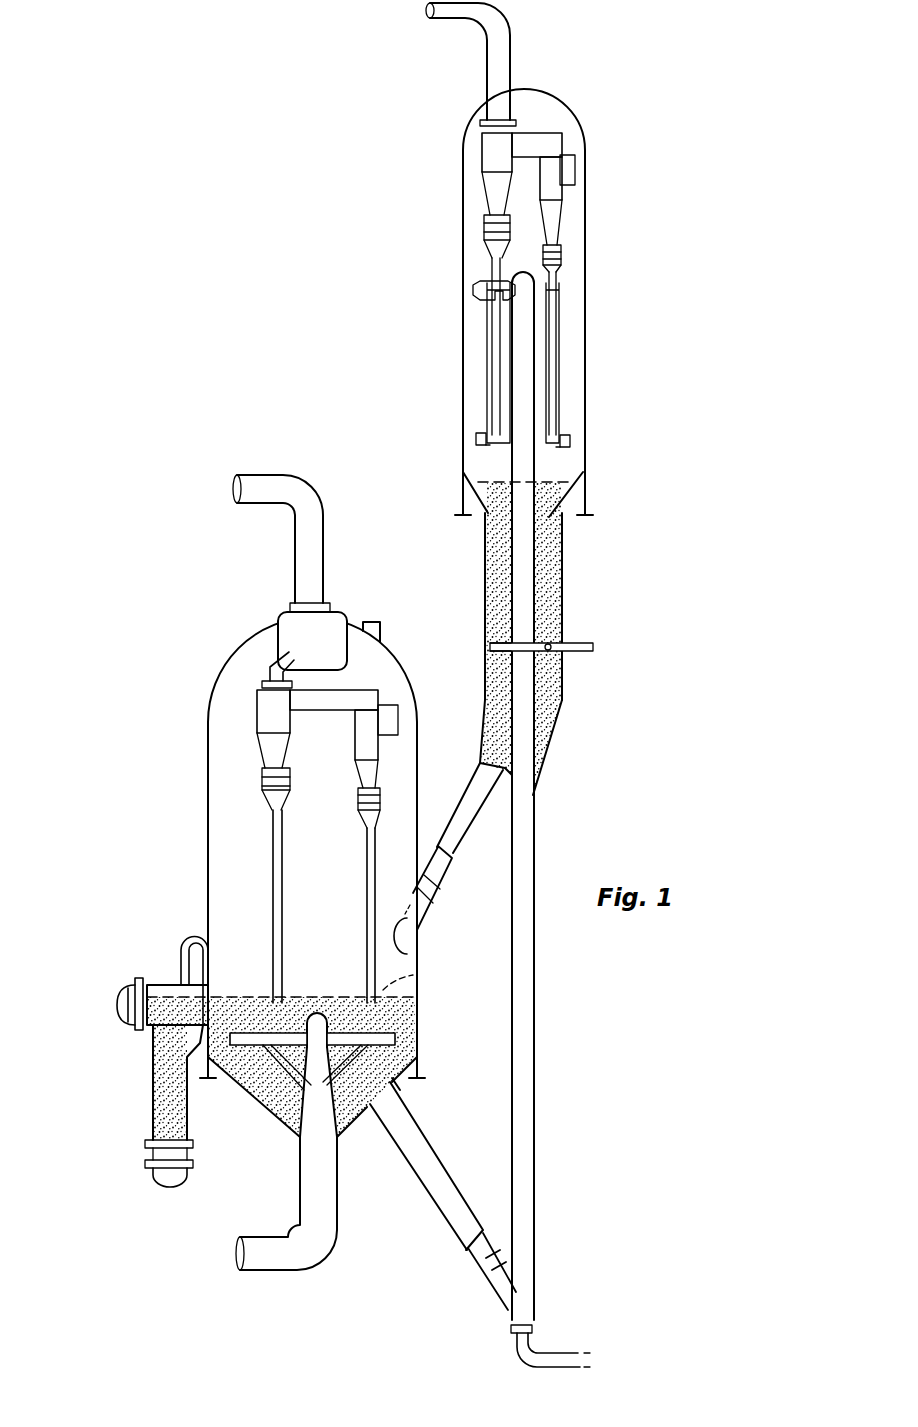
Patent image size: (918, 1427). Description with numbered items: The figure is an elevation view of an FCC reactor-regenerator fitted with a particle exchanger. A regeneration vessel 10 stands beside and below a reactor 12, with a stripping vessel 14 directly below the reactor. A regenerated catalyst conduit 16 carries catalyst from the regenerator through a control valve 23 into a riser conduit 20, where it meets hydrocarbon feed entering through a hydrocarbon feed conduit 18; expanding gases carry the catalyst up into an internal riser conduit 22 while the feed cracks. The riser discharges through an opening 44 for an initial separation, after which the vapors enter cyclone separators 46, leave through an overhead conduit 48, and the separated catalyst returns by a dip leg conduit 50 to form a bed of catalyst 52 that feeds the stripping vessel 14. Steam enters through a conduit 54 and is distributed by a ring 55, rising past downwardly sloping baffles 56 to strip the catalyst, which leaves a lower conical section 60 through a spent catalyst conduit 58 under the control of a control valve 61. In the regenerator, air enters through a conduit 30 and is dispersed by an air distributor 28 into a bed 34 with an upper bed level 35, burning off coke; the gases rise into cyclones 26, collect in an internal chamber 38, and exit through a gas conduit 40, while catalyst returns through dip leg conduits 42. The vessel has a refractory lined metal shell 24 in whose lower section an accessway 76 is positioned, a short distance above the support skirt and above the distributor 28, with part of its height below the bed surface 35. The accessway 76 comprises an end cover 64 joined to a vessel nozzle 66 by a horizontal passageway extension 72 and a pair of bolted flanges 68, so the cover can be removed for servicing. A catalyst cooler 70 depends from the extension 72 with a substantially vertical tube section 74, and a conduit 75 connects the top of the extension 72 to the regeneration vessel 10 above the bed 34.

The regeneration vessel 10 is at (186, 715).
The reactor 12 is at (604, 379).
The stripping vessel 14 is at (565, 682).
The regenerated catalyst conduit 16 is at (405, 1116).
The hydrocarbon feed conduit 18 is at (560, 1353).
The riser conduit 20 is at (534, 1186).
The internal riser conduit 22 is at (541, 705).
The control valve 23 is at (470, 1258).
The metal shell 24 is at (208, 768).
The cyclones 26 is at (257, 708).
The air distributor 28 is at (250, 1081).
The conduit 30 is at (276, 1275).
The bed 34 is at (400, 1018).
The upper bed level 35 is at (415, 979).
The internal chamber 38 is at (325, 650).
The gas conduit 40 is at (258, 504).
The dip leg conduits 42 is at (367, 857).
The opening 44 is at (480, 300).
The cyclone separators 46 is at (482, 155).
The overhead conduit 48 is at (511, 31).
The dip leg conduit 50 is at (559, 330).
The bed of catalyst 52 is at (560, 497).
The conduit 54 is at (581, 641).
The ring 55 is at (490, 651).
The downwardly sloping baffles 56 is at (555, 578).
The spent catalyst conduit 58 is at (477, 815).
The lower conical section 60 is at (546, 745).
The control valve 61 is at (448, 858).
The end cover 64 is at (113, 1005).
The vessel nozzle 66 is at (205, 965).
The flanges 68 is at (135, 1030).
The catalyst cooler 70 is at (128, 1057).
The horizontal passageway extension 72 is at (160, 985).
The tube section 74 is at (155, 1112).
The conduit 75 is at (181, 950).
The accessway 76 is at (106, 972).